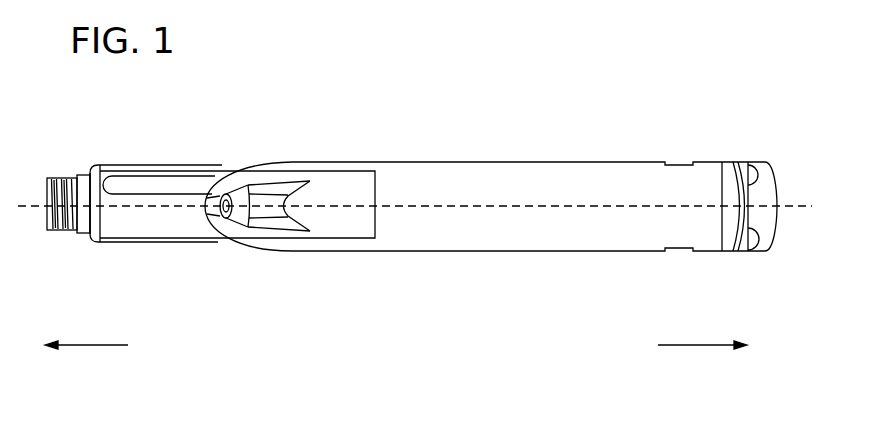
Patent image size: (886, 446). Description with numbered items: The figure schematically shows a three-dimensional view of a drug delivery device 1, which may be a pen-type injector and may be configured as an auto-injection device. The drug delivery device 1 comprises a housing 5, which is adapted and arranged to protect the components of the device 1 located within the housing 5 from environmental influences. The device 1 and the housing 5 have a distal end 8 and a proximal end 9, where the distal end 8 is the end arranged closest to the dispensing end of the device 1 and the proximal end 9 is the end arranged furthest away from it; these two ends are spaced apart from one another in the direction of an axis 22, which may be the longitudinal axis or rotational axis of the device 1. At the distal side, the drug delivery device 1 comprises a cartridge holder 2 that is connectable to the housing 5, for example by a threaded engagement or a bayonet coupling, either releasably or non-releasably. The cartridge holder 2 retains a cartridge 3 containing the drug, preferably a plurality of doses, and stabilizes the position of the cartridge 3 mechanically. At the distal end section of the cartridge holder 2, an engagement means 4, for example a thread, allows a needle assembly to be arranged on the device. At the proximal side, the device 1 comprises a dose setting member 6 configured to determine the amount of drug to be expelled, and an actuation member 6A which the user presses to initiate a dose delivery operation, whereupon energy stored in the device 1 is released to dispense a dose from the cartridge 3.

The drug delivery device 1 is at (387, 148).
The cartridge holder 2 is at (158, 242).
The cartridge 3 is at (193, 180).
The engagement means 4 is at (73, 178).
The housing 5 is at (553, 230).
The dose setting member 6 is at (723, 177).
The actuation member 6A is at (760, 252).
The distal end 8 is at (86, 361).
The proximal end 9 is at (702, 360).
The axis 22 is at (795, 203).